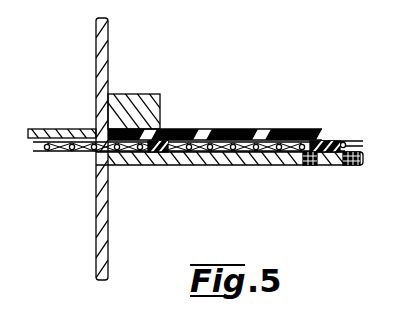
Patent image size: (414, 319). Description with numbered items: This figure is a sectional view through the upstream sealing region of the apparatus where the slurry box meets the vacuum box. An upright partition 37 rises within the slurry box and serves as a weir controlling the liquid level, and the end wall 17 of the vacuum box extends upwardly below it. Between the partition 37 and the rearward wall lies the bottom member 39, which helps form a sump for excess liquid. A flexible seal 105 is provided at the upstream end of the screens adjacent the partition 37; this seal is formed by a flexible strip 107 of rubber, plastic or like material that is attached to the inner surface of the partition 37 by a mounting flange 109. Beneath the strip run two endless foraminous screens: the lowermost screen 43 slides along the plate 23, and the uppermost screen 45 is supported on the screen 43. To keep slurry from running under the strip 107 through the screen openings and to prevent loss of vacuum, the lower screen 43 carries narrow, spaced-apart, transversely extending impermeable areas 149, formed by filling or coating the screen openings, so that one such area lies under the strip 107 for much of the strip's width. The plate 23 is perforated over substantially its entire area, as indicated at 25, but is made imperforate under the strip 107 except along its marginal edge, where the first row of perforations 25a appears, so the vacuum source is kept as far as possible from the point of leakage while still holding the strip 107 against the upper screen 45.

The partition 37 is at (109, 38).
The end wall 17 is at (96, 196).
The bottom member 39 is at (64, 129).
The mounting flange 109 is at (137, 93).
The flexible seal 105 is at (160, 114).
The flexible strip 107 is at (224, 128).
The uppermost screen 45 is at (355, 140).
The lowermost screen 43 is at (277, 142).
The impermeable areas 149 is at (329, 140).
The plate 23 is at (255, 166).
The first row of perforations 25a is at (309, 167).
The perforations 25 is at (349, 167).